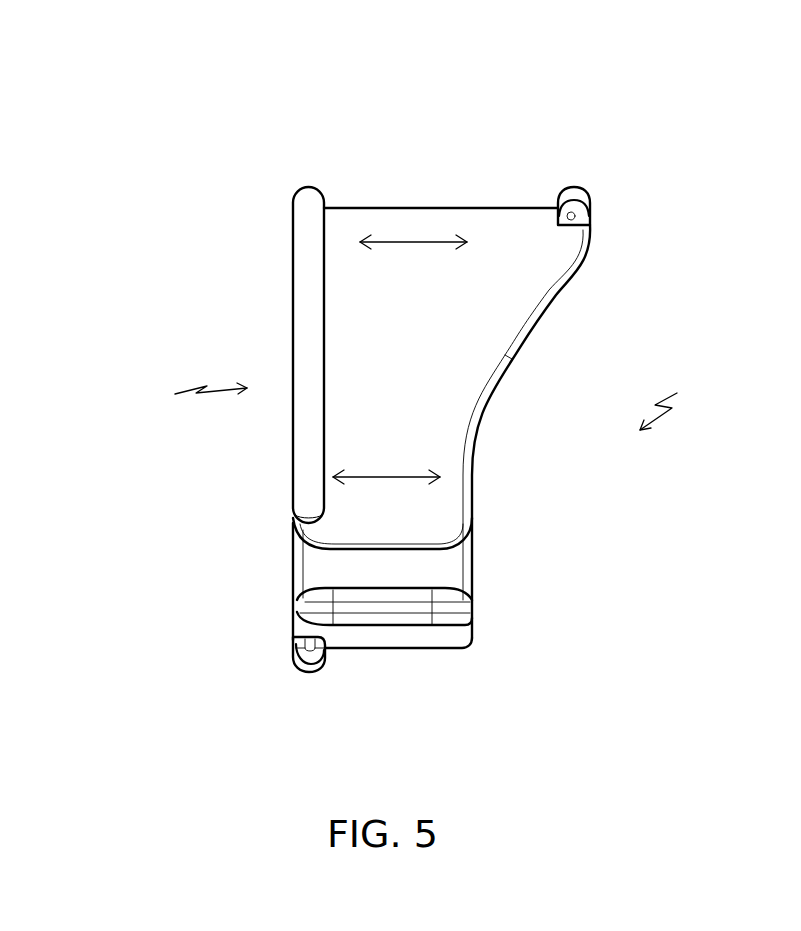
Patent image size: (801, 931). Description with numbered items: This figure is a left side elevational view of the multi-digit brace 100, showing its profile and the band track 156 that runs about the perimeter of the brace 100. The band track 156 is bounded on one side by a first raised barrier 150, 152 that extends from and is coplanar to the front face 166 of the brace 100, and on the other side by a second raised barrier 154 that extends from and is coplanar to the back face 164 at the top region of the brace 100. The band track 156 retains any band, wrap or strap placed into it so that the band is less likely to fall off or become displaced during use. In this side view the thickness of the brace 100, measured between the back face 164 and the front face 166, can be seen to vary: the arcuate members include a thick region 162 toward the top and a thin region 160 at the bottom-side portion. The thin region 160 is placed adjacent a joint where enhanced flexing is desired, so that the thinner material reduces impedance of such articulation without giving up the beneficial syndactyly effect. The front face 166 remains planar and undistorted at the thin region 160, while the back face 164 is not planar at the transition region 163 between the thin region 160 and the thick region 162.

The brace 100 is at (692, 110).
The first raised barrier 150 is at (306, 186).
The first raised barrier 152 is at (306, 672).
The second raised barrier 154 is at (572, 186).
The band track 156 is at (425, 178).
The thin region 160 is at (386, 478).
The thick region 162 is at (410, 243).
The transition region 163 is at (528, 347).
The back face 164 is at (680, 405).
The front face 166 is at (189, 397).